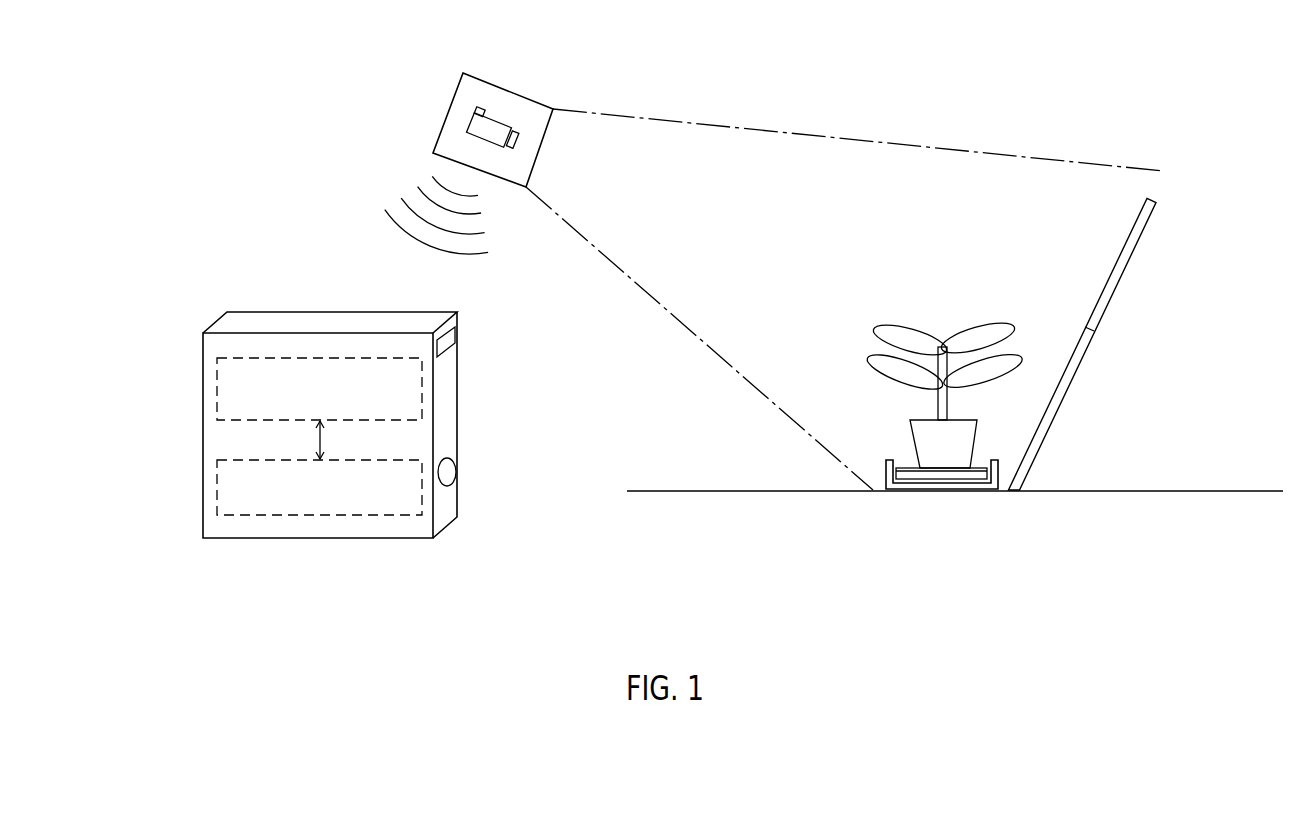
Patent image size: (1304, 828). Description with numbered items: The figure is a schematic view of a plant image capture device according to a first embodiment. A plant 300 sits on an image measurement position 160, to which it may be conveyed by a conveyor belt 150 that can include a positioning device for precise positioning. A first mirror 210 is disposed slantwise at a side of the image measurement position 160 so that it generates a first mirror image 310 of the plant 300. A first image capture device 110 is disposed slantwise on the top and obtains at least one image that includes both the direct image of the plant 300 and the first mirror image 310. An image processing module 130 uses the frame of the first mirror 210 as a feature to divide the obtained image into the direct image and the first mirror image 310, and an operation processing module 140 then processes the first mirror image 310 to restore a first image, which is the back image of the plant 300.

The first image capture device 110 is at (508, 91).
The image processing module 130 is at (217, 383).
The operation processing module 140 is at (217, 478).
The conveyor belt 150 is at (943, 480).
The image measurement position 160 is at (970, 490).
The first mirror 210 is at (1126, 267).
The plant 300 is at (897, 310).
The first mirror image 310 is at (1093, 332).